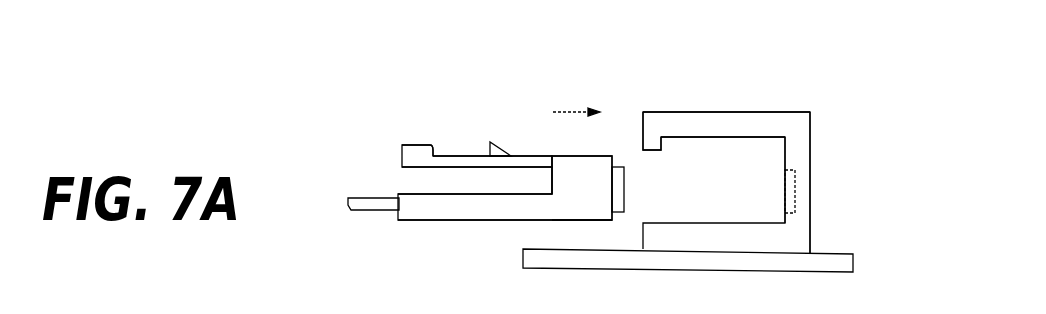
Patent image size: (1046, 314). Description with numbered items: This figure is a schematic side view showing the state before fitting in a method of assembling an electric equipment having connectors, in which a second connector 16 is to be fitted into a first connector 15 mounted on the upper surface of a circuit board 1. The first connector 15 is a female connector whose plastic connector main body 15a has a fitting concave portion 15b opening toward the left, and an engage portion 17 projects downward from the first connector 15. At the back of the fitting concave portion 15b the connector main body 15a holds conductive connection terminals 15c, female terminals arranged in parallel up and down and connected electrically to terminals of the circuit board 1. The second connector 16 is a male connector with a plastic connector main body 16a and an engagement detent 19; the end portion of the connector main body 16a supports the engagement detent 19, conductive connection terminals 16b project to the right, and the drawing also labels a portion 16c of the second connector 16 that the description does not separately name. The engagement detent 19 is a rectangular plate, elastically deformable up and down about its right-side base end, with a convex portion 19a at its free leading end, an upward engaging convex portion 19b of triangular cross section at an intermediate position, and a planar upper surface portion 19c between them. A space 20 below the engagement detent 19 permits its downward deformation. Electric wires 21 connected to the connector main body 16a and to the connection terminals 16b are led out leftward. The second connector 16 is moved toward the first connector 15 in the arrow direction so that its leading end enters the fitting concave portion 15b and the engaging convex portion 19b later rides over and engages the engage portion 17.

The circuit board 1 is at (832, 253).
The first connector 15 is at (812, 118).
The connector main body 15a is at (812, 148).
The fitting concave portion 15b is at (785, 150).
The connection terminals 15c is at (797, 184).
The second connector 16 is at (435, 220).
The connector main body 16a is at (487, 214).
The connection terminals 16b is at (626, 188).
The connector head portion 16c is at (577, 170).
The engage portion 17 is at (648, 143).
The engagement detent 19 is at (400, 158).
The convex portion 19a is at (418, 143).
The engaging convex portion 19b is at (499, 141).
The upper surface portion 19c is at (463, 155).
The space 20 is at (438, 177).
The electric wires 21 is at (360, 217).